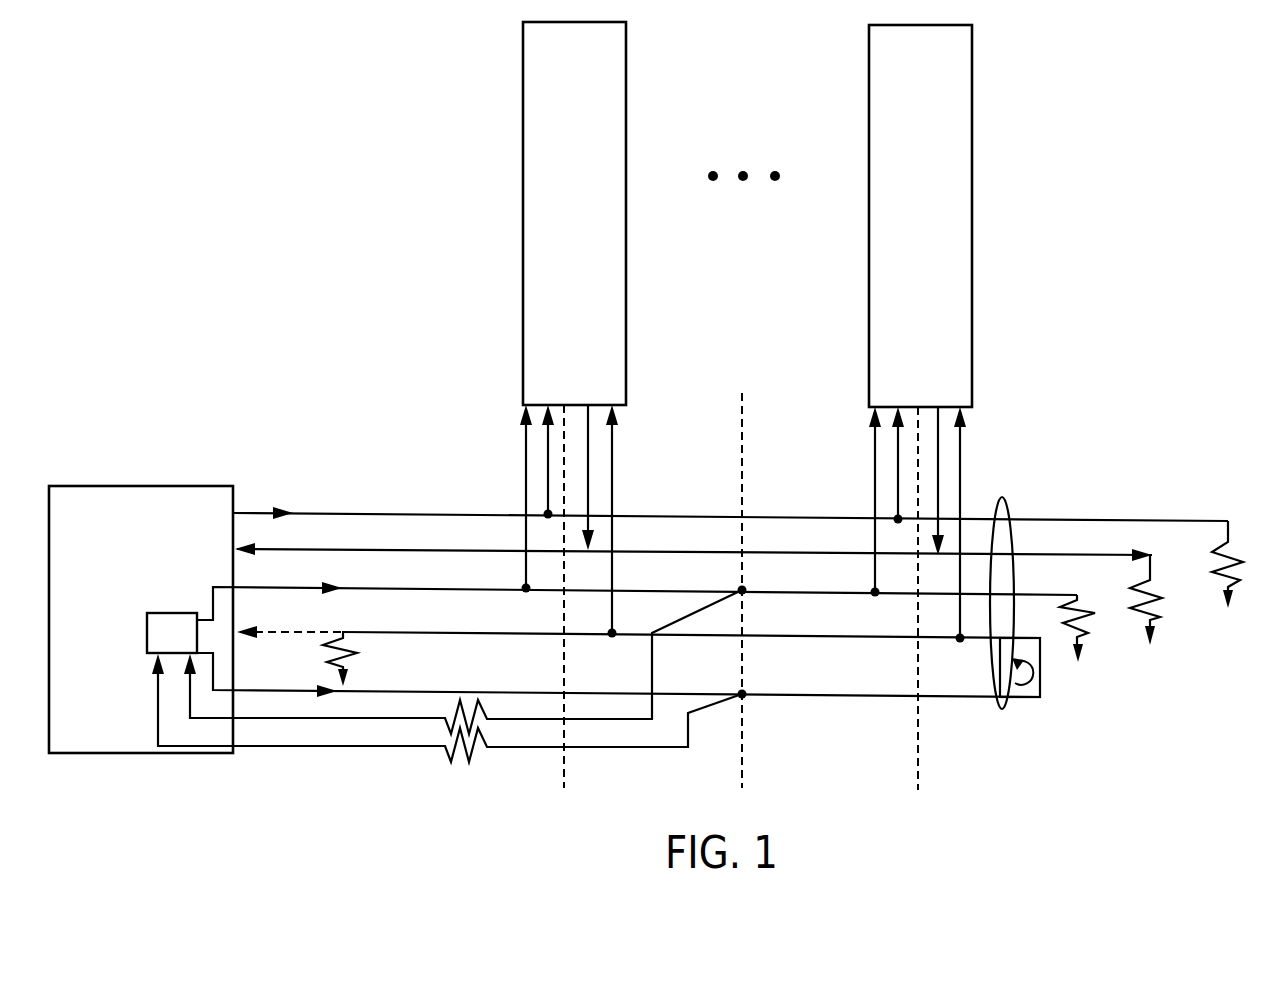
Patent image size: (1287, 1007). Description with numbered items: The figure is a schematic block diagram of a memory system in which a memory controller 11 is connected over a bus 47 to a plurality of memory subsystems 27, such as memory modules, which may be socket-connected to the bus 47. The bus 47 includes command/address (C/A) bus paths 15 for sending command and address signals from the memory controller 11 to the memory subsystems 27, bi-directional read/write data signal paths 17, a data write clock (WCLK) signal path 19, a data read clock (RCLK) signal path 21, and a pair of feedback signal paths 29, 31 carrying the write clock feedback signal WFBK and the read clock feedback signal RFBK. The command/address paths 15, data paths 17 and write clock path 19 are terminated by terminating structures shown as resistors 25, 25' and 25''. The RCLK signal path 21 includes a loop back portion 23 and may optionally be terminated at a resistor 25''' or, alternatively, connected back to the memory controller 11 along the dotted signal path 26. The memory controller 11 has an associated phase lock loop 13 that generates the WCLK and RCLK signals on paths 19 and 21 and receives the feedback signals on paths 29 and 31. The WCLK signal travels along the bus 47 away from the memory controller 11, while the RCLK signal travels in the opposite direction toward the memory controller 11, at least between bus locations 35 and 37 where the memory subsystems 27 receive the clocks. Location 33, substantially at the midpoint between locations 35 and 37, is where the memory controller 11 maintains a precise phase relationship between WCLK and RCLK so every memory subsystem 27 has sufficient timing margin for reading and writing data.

The memory controller 11 is at (204, 486).
The phase lock loop 13 is at (166, 613).
The command/address (C/A) bus paths 15 is at (350, 513).
The read/write data signal paths 17 is at (368, 549).
The data write clock (WCLK) signal path 19 is at (368, 587).
The data read clock (RCLK) signal path 21 is at (368, 690).
The loop back portion 23 is at (1040, 696).
The resistor 25 is at (1248, 564).
The resistor 25' is at (1181, 608).
The resistor 25'' is at (1116, 657).
The resistor 25''' is at (369, 659).
The dotted signal path 26 is at (302, 632).
The memory subsystems 27 is at (626, 214).
The feedback signal path 29 is at (368, 718).
The feedback signal path 31 is at (368, 746).
The bus location 33 is at (742, 770).
The bus location 35 is at (564, 785).
The bus location 37 is at (918, 762).
The bus 47 is at (1003, 706).